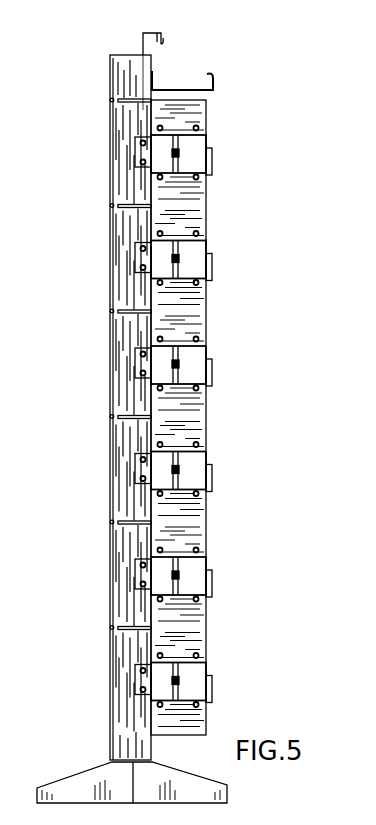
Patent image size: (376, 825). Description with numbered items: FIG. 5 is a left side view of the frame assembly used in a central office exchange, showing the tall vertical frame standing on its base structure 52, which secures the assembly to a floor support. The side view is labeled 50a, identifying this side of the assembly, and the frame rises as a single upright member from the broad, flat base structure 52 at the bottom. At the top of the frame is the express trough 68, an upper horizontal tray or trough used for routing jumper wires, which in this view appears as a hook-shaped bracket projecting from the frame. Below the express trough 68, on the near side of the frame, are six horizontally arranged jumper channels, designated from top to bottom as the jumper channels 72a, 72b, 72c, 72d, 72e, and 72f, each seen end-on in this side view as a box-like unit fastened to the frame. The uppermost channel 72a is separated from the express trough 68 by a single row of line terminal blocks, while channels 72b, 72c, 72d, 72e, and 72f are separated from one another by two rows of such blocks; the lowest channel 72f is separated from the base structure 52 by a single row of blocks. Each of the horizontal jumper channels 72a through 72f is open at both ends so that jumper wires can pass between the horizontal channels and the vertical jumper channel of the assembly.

The post 50a is at (122, 352).
The base structure 52 is at (78, 775).
The express trough 68 is at (175, 85).
The horizontal jumper channel 72a is at (190, 153).
The horizontal jumper channel 72b is at (190, 259).
The horizontal jumper channel 72c is at (190, 364).
The horizontal jumper channel 72d is at (190, 469).
The horizontal jumper channel 72e is at (190, 579).
The horizontal jumper channel 72f is at (195, 680).